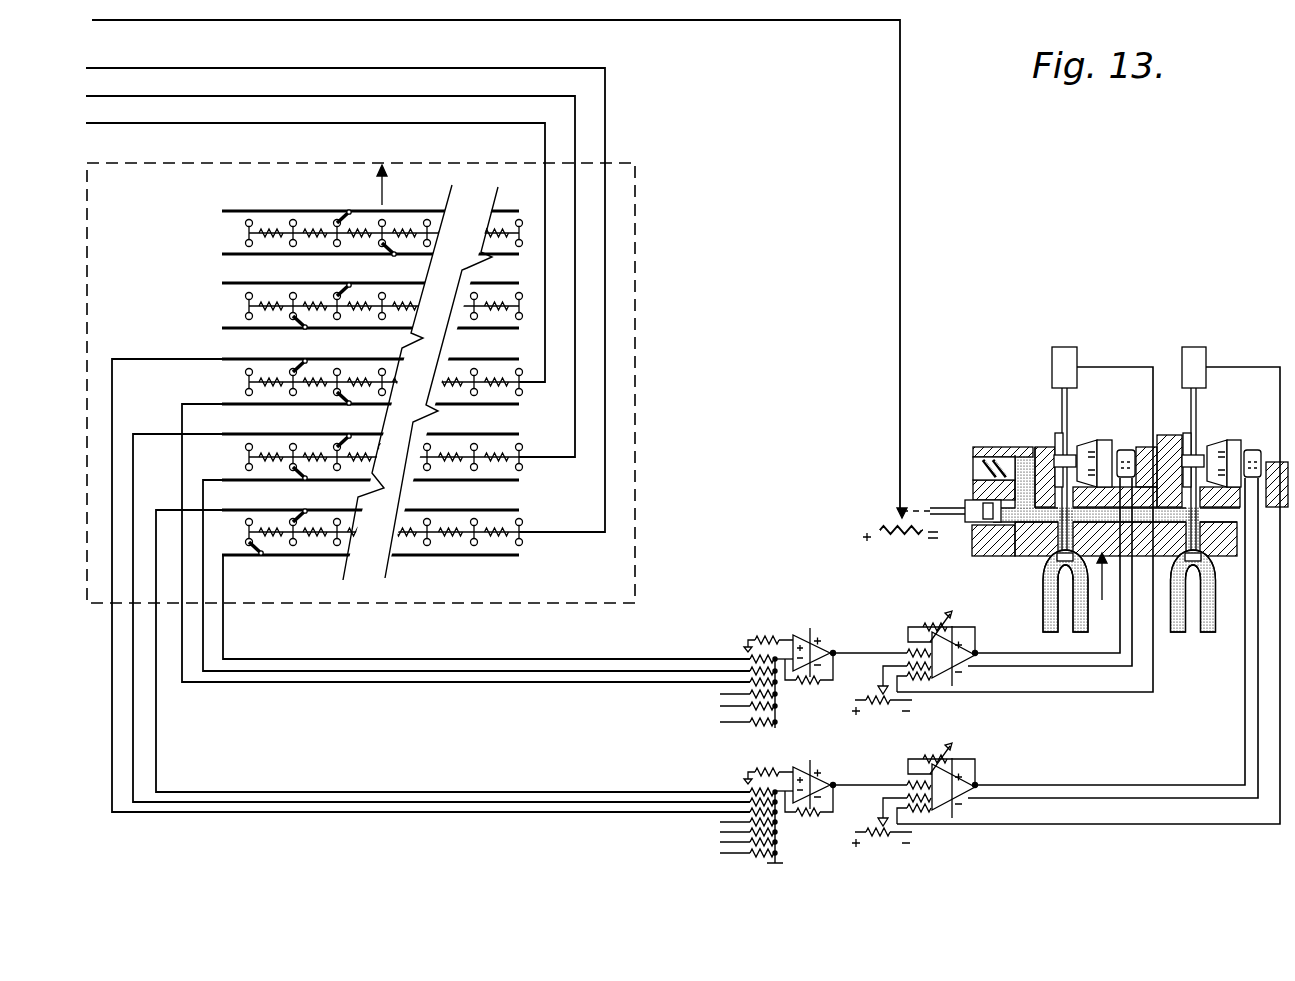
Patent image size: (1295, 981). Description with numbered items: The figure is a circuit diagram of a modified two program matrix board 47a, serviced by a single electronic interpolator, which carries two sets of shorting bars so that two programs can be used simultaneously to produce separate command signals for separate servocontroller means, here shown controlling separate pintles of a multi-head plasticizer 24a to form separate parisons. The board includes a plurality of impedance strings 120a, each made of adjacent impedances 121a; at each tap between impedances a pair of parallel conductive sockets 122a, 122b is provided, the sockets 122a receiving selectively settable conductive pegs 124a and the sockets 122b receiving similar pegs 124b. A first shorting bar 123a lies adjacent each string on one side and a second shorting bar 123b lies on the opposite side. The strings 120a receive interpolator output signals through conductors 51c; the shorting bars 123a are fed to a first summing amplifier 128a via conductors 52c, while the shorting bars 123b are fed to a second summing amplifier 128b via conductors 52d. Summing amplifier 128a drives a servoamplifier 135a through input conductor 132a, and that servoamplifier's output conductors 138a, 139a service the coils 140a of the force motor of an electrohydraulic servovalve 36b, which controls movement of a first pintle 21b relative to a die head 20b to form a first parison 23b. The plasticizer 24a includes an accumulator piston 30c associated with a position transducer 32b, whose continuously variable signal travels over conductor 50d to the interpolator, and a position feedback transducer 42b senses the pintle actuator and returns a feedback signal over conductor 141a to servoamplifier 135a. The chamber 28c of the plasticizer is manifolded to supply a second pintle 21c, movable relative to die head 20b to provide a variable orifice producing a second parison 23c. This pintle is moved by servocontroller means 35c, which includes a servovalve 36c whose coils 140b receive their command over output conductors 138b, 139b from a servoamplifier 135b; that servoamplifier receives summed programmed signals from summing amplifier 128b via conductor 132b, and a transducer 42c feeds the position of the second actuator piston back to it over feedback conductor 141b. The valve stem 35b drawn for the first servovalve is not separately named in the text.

The two program matrix board 47a is at (634, 164).
The conductor 50d is at (898, 288).
The conductors 51c is at (272, 128).
The conductors 52c is at (400, 650).
The conductors 52d is at (390, 783).
The impedance string 120a is at (520, 531).
The impedances 121a is at (447, 556).
The conductive socket 122a is at (478, 560).
The conductive socket 122b is at (476, 518).
The first shorting bar 123a is at (300, 558).
The second shorting bar 123b is at (450, 509).
The conductive pegs 124a is at (244, 562).
The conductive pegs 124b is at (290, 518).
The first summing amplifier 128a is at (825, 650).
The second summing amplifier 128b is at (825, 782).
The input conductor 132a is at (862, 652).
The conductor 132b is at (862, 784).
The servoamplifier 135a is at (955, 668).
The servoamplifier 135b is at (955, 800).
The signal output conductor 138a is at (1030, 653).
The output conductor 138b is at (1126, 785).
The signal output conductor 139a is at (1038, 668).
The output conductor 139b is at (1125, 798).
The conductor 141a is at (1092, 694).
The feedback conductor 141b is at (1182, 824).
The coils 140a is at (1127, 450).
The coils 140b is at (1250, 450).
The position feedback transducer 42b is at (1042, 362).
The transducer 42c is at (1196, 345).
The valve stem 35b is at (1048, 436).
The servocontroller means 35c is at (1178, 440).
The electrohydraulic servovalve 36b is at (1095, 440).
The electrohydraulic servovalve 36c is at (1222, 440).
The multi-head plasticizer 24a is at (974, 451).
The accumulator piston 30c is at (988, 520).
The chamber 28c is at (1032, 514).
The position transducer 32b is at (897, 540).
The die head 20b is at (1130, 526).
The first pintle 21b is at (1046, 592).
The second pintle 21c is at (1203, 590).
The first parison 23b is at (1043, 580).
The second parison 23c is at (1212, 632).